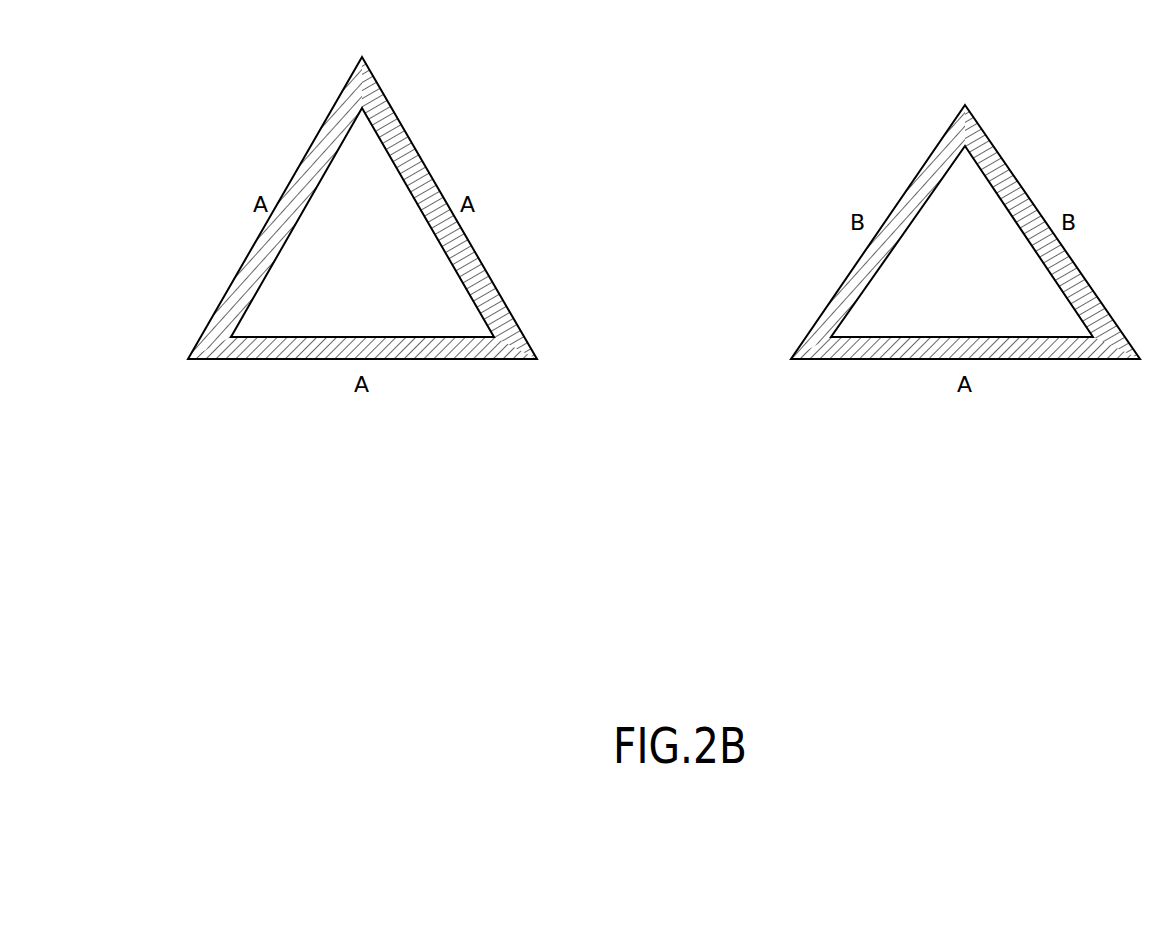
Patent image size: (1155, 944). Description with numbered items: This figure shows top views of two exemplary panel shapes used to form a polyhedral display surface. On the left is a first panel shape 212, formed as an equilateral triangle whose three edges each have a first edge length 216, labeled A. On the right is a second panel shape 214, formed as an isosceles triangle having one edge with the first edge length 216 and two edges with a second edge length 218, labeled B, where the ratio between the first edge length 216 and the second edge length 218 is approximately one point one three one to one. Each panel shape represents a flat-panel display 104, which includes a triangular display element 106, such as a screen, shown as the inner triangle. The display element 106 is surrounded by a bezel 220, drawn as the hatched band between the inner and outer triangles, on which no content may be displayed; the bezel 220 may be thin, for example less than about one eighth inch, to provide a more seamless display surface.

The first panel shape 212 is at (240, 61).
The second panel shape 214 is at (889, 107).
The flat-panel display 104 is at (423, 360).
The display element 106 is at (443, 290).
The first edge length 216 is at (397, 111).
The second edge length 218 is at (1006, 165).
The bezel 220 is at (247, 285).